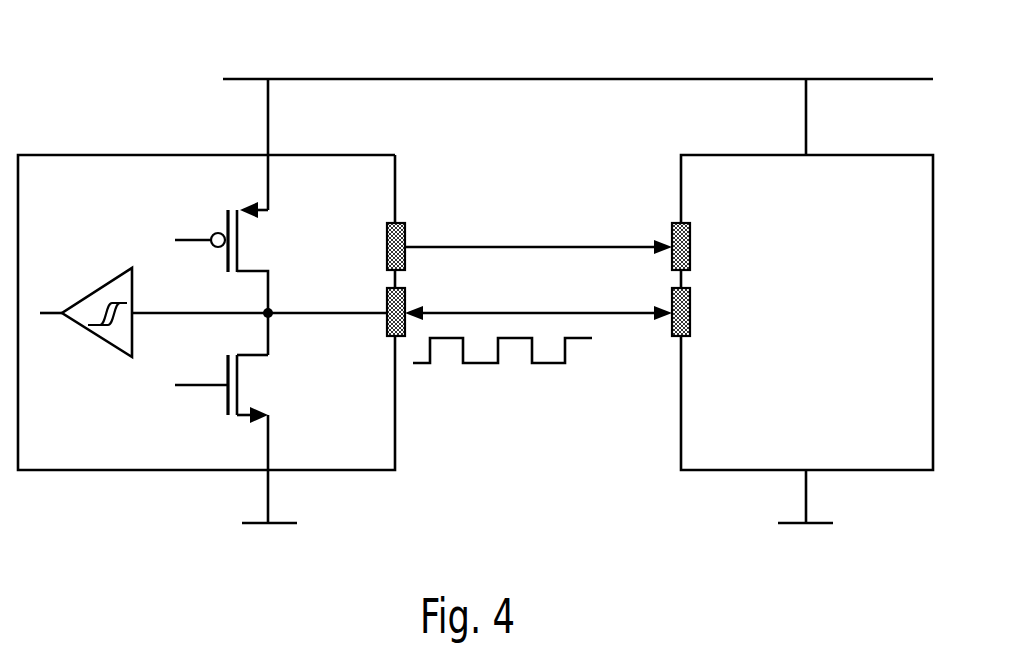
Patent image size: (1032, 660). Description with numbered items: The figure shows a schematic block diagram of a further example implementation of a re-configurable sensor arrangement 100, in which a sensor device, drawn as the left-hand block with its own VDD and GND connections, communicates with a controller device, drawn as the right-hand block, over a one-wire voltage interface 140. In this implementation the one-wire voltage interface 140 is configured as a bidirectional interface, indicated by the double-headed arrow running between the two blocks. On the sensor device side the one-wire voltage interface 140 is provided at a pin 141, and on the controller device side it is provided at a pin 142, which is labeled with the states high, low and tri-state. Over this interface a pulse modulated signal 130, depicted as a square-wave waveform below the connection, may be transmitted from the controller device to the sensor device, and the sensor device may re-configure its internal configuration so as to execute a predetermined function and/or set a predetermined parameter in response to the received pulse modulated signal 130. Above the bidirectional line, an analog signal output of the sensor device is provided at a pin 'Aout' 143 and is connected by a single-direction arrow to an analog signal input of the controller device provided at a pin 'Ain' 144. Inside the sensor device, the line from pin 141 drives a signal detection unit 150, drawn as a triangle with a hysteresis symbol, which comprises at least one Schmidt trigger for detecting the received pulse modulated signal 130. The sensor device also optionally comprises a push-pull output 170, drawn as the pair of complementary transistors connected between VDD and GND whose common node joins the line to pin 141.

The re-configurable sensor arrangement 100 is at (175, 40).
The pulse modulated signal 130 is at (482, 365).
The one-wire voltage interface 140 is at (547, 311).
The pin 141 is at (394, 337).
The pin 142 is at (683, 337).
The pin 'Aout' 143 is at (405, 232).
The pin 'Ain' 144 is at (672, 232).
The signal detection unit 150 is at (98, 290).
The push-pull output 170 is at (272, 384).